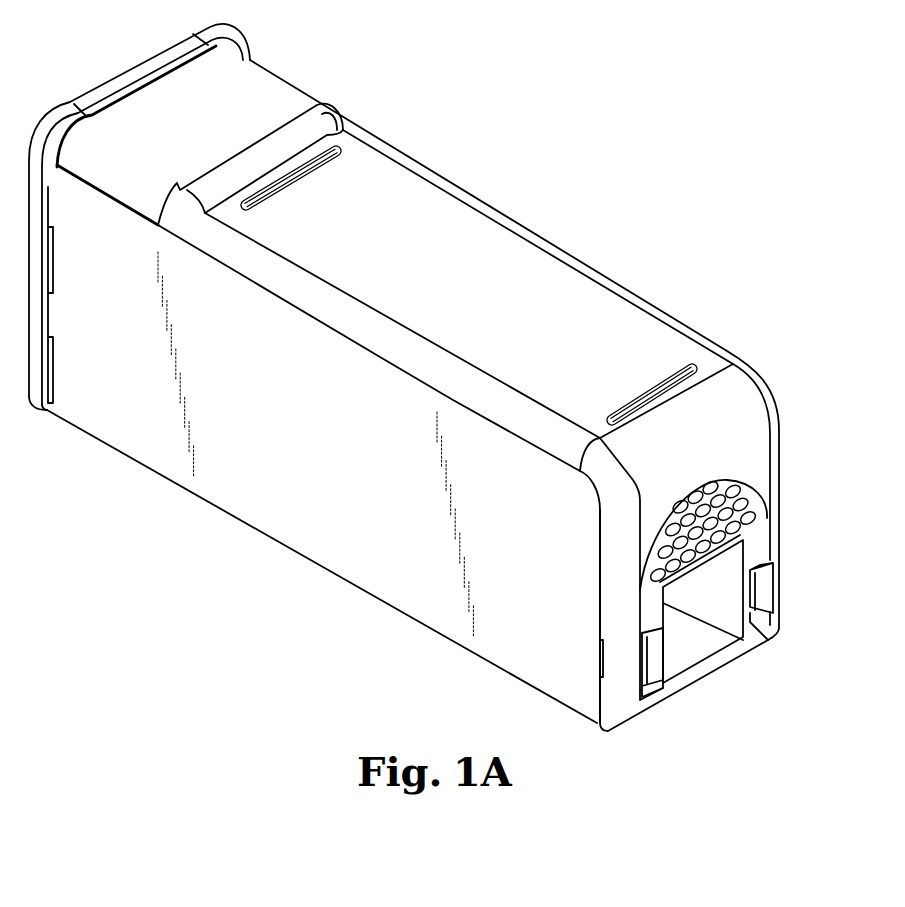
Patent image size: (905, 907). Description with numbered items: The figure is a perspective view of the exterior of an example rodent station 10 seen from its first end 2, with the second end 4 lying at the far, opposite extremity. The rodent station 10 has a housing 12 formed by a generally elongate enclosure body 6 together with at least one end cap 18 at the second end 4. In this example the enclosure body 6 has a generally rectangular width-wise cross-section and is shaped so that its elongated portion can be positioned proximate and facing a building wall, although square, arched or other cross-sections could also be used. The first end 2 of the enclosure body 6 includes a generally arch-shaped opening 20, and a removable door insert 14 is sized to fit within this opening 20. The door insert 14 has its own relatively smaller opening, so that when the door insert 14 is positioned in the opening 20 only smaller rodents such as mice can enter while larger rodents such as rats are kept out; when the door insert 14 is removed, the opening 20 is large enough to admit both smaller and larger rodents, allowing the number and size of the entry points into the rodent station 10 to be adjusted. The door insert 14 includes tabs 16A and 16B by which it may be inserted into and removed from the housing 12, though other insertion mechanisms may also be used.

The first end 2 is at (753, 675).
The second end 4 is at (84, 60).
The enclosure body 6 is at (540, 292).
The rodent station 10 is at (450, 79).
The housing 12 is at (288, 80).
The door insert 14 is at (760, 515).
The tab 16A is at (658, 667).
The tab 16B is at (763, 594).
The end cap 18 is at (140, 62).
The arch-shaped opening 20 is at (723, 470).